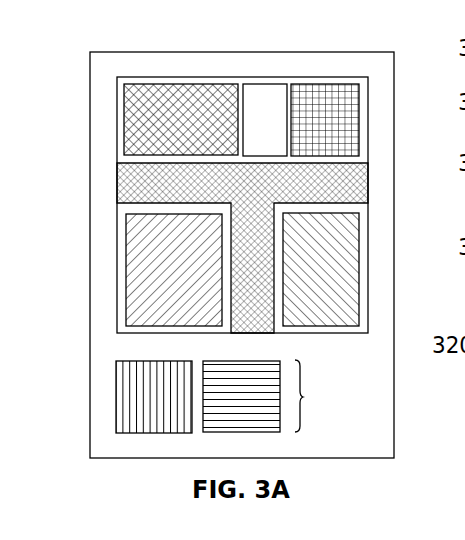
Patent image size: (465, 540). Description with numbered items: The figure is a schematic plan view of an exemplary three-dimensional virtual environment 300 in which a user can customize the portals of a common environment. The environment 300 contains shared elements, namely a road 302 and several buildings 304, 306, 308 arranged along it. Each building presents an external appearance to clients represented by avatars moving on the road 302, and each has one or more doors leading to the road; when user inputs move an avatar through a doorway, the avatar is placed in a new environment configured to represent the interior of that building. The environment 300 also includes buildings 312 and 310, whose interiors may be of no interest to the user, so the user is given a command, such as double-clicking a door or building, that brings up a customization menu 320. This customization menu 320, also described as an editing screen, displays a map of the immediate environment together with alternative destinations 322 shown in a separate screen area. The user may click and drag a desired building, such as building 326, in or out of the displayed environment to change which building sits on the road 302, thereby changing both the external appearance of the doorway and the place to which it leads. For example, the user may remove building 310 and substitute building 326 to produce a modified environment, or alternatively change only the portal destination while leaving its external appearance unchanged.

The 3-D environment 300 is at (137, 74).
The road 302 is at (123, 185).
The building 304 is at (133, 275).
The building 306 is at (350, 267).
The building 308 is at (264, 97).
The building 310 is at (325, 97).
The building 312 is at (130, 125).
The customization menu 320 is at (90, 362).
The alternative destinations 322 is at (277, 396).
The building 326 is at (115, 397).